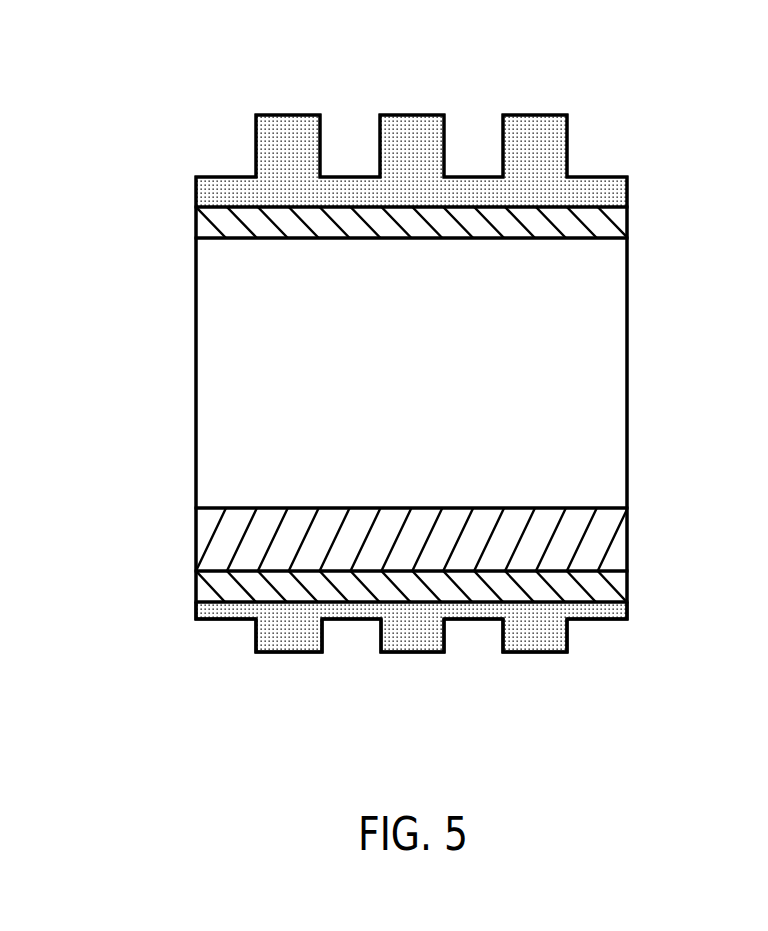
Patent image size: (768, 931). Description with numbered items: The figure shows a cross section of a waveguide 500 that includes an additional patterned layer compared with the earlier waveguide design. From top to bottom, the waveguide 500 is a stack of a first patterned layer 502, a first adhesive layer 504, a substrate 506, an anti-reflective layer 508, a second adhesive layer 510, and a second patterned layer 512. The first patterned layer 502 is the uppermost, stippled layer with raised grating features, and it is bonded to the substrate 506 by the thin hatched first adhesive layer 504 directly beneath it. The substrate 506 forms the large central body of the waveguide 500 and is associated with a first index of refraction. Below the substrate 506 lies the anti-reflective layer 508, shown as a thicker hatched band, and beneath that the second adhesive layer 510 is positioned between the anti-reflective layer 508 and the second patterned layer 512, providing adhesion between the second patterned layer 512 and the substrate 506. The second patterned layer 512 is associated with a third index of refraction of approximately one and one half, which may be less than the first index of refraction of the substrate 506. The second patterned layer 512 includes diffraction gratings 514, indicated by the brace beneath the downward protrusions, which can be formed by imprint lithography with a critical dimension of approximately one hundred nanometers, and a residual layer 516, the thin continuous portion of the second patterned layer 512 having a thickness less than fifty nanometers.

The waveguide 500 is at (273, 76).
The first patterned layer 502 is at (628, 137).
The first adhesive layer 504 is at (638, 225).
The substrate 506 is at (638, 392).
The anti-reflective layer 508 is at (638, 542).
The second adhesive layer 510 is at (638, 588).
The second patterned layer 512 is at (615, 651).
The diffraction gratings 514 is at (565, 665).
The residual layer 516 is at (185, 610).